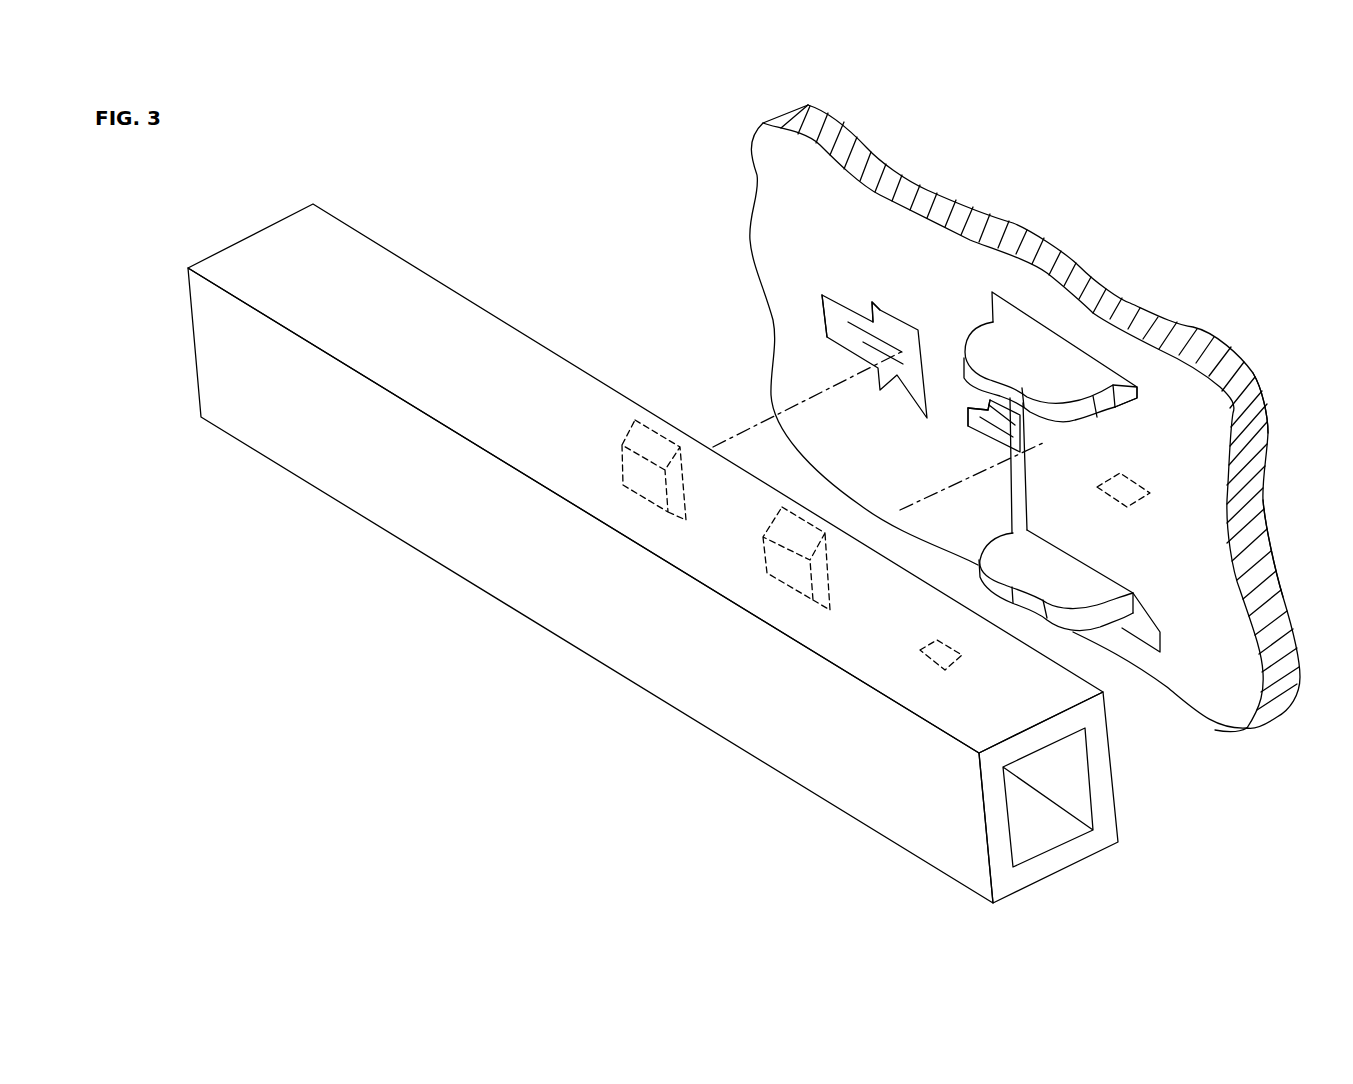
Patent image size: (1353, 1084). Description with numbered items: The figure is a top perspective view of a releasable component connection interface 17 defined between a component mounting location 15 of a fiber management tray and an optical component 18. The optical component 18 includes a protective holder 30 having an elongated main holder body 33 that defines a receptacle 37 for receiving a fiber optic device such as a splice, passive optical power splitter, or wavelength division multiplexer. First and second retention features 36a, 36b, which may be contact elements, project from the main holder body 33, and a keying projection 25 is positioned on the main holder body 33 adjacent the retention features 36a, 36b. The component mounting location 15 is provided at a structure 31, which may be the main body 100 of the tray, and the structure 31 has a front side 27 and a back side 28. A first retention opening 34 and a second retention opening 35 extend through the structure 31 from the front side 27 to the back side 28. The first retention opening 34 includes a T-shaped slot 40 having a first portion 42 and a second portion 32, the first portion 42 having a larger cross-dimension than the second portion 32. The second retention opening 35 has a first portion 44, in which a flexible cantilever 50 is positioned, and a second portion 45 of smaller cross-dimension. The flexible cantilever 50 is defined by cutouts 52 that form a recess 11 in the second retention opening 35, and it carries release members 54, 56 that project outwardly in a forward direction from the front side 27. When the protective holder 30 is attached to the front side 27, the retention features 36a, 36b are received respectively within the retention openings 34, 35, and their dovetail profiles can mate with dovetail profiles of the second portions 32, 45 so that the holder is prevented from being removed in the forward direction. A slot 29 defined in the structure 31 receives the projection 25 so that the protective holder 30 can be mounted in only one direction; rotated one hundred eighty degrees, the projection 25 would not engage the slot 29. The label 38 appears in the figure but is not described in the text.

The optical component 18 is at (670, 531).
The protective holder 30 is at (462, 295).
The main holder body 33 is at (480, 547).
The receptacle 37 is at (1037, 822).
The first retention feature 36a is at (628, 432).
The second retention feature 36b is at (775, 513).
The projection 25 is at (943, 635).
The releasable component connection interface 17 is at (657, 233).
The component mounting location 15 is at (1027, 453).
The plate 38 is at (789, 226).
The structure 31 is at (1005, 213).
The main body 100 is at (1268, 410).
The back side 28 is at (1275, 540).
The front side 27 is at (1240, 707).
The release member 56 is at (1082, 358).
The release member 54 is at (1100, 597).
The cutout 52 is at (1133, 390).
The recess 11 is at (1012, 504).
The first portion of the T-shaped slot 42 is at (910, 395).
The second portion of the T-shaped slot 32 is at (833, 322).
The T-shaped slot 40 is at (893, 306).
The first retention opening 34 is at (820, 349).
The first portion of the second retention opening 44 is at (1000, 436).
The second portion of the second retention opening 45 is at (975, 412).
The second retention opening 35 is at (975, 452).
The slot 29 is at (1138, 488).
The flexible cantilever 50 is at (1054, 483).